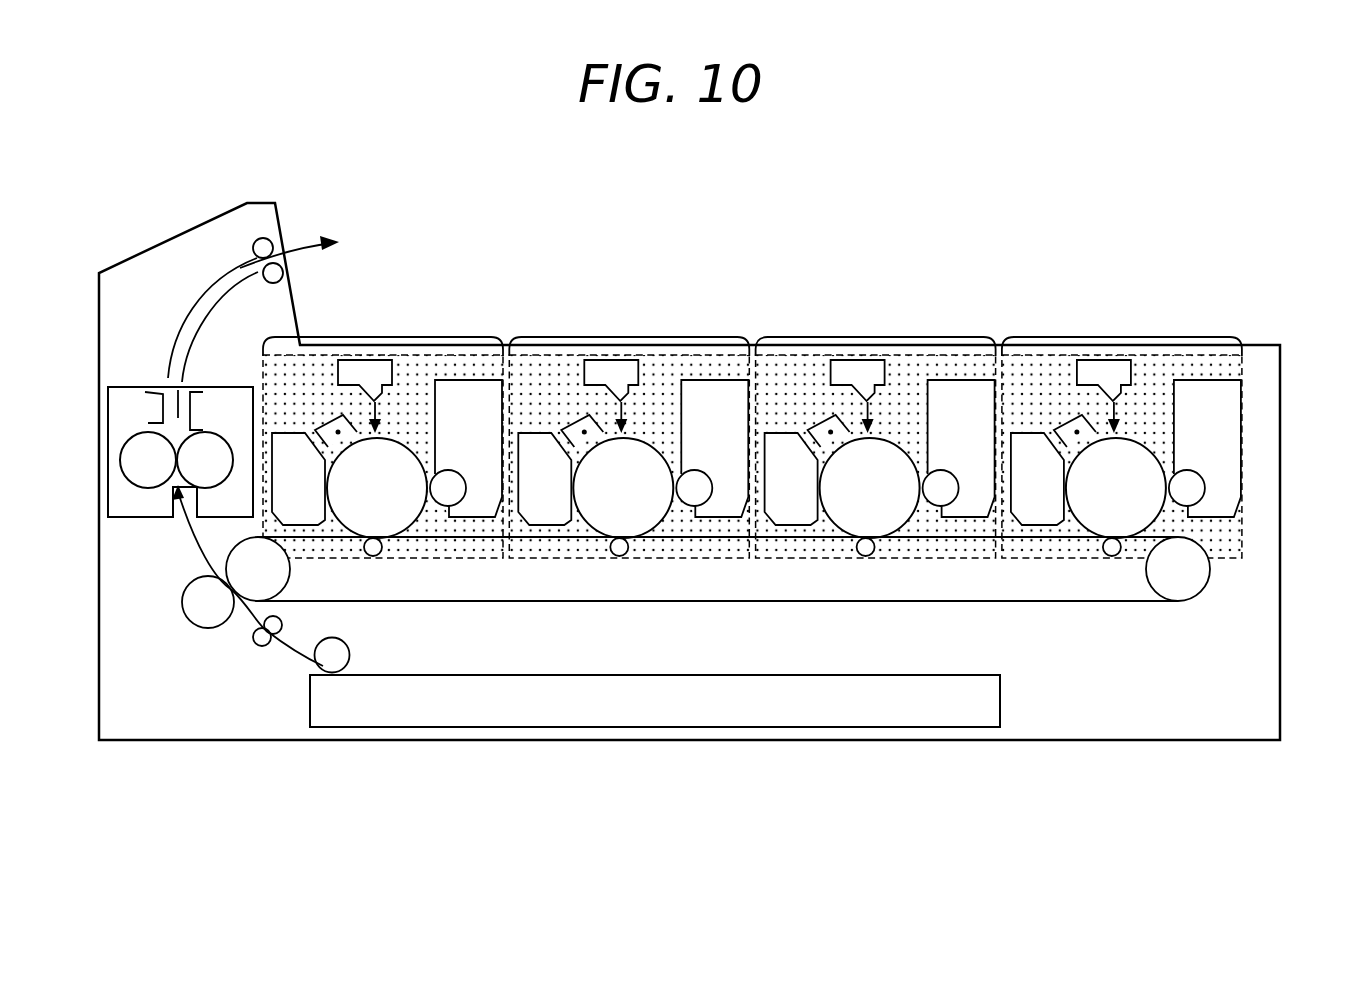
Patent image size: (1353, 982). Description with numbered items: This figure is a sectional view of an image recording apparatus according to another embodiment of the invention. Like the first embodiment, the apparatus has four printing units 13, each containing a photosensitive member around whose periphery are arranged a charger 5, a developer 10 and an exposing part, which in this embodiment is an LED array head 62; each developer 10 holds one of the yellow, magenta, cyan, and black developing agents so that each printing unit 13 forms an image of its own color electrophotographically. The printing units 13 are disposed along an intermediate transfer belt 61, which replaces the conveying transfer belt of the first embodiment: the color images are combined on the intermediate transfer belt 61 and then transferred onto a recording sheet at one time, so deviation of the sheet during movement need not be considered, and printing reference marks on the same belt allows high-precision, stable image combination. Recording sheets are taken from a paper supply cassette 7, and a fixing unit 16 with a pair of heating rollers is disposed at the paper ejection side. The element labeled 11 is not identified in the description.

The developer 10 is at (1230, 395).
The printing unit 13 is at (807, 520).
The LED array head 62 is at (1115, 392).
The charger 5 is at (1087, 437).
The transfer roller 11 is at (1037, 512).
The intermediate transfer belt 61 is at (1015, 602).
The paper supply cassette 7 is at (720, 702).
The fixing unit 16 is at (137, 503).